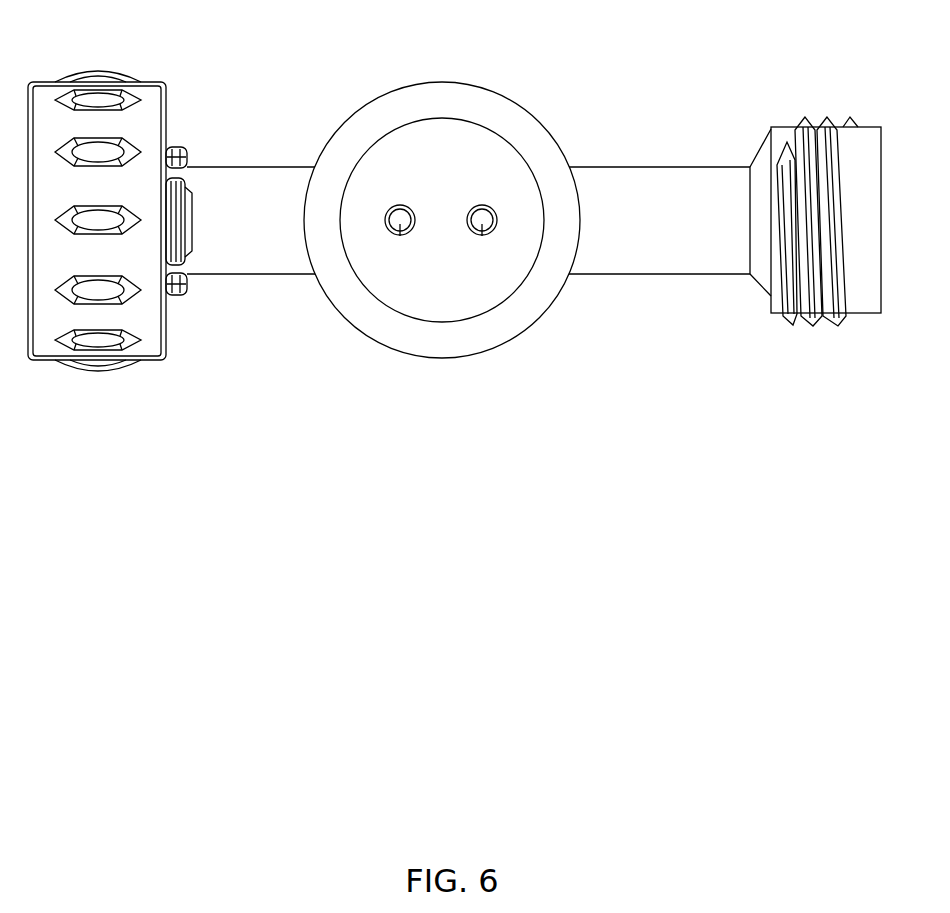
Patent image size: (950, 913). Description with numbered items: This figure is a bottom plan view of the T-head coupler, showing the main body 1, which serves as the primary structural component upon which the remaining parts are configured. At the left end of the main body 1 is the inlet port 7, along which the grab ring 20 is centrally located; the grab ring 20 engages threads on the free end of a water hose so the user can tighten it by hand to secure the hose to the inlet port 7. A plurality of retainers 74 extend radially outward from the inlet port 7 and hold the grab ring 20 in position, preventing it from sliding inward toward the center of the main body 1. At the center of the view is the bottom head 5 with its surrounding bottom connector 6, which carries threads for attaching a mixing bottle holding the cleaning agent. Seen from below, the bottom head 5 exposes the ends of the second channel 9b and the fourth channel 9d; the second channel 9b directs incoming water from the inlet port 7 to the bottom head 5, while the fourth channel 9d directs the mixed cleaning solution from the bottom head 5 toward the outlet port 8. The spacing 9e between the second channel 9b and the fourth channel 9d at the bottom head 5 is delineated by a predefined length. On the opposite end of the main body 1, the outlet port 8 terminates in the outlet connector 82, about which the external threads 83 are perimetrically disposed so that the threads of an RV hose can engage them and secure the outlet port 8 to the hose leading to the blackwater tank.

The main body 1 is at (693, 407).
The bottom head 5 is at (408, 282).
The bottom connector 6 is at (556, 313).
The inlet port 7 is at (277, 162).
The outlet port 8 is at (675, 162).
The second channel 9b is at (398, 199).
The fourth channel 9d is at (486, 199).
The spacing 9e is at (400, 247).
The grab ring 20 is at (79, 377).
The plurality of retainers 74 is at (188, 296).
The outlet connector 82 is at (784, 221).
The external threads 83 is at (823, 313).